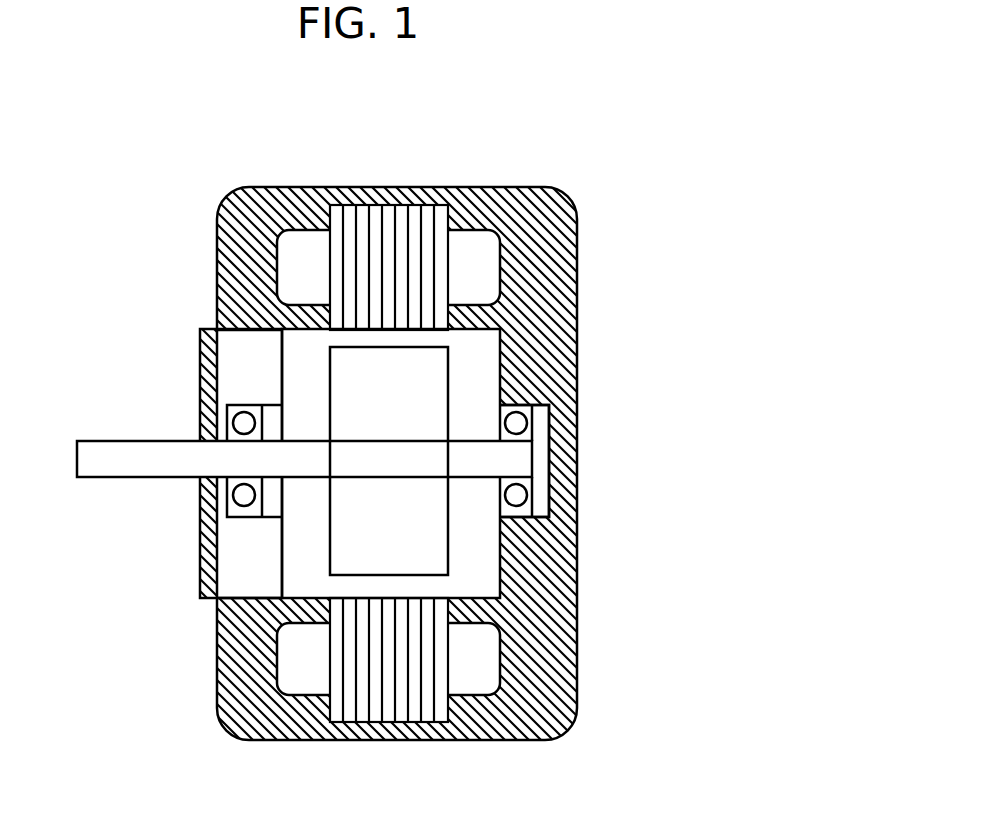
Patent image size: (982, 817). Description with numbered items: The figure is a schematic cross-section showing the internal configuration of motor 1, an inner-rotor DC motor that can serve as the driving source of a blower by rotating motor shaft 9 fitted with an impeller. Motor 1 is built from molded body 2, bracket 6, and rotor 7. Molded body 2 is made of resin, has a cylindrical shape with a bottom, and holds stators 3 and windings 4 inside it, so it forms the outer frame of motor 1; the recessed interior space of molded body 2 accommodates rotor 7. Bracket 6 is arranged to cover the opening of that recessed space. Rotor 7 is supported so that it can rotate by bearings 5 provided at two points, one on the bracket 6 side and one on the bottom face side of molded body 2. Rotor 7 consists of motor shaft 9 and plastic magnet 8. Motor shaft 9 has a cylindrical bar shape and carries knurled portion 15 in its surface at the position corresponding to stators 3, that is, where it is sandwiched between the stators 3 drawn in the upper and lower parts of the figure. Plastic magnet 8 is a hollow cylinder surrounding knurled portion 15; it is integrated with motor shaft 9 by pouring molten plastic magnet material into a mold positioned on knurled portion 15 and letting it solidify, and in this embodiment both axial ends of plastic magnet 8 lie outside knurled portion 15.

The motor 1 is at (166, 188).
The molded body 2 is at (540, 243).
The stators 3 is at (400, 228).
The windings 4 is at (293, 245).
The bearings 5 is at (236, 409).
The bracket 6 is at (235, 563).
The rotor 7 is at (428, 553).
The plastic magnet 8 is at (350, 372).
The motor shaft 9 is at (105, 457).
The knurled portion 15 is at (397, 450).